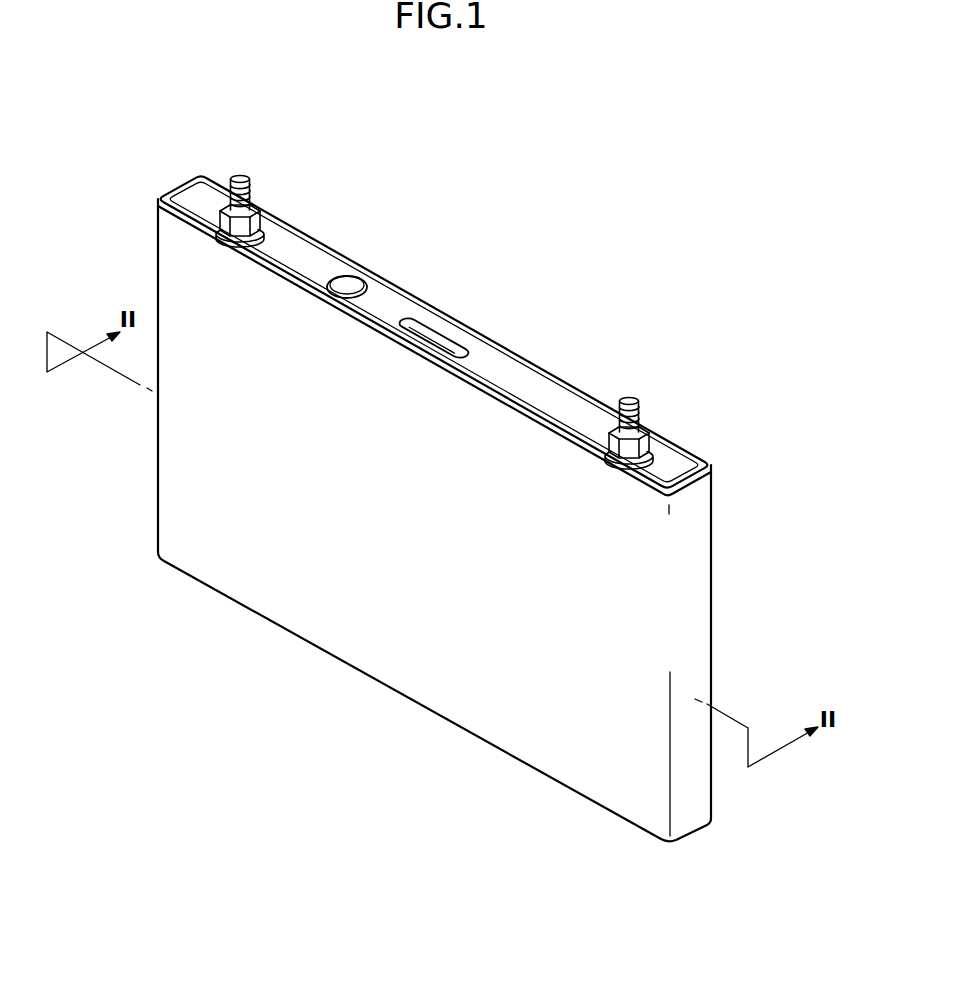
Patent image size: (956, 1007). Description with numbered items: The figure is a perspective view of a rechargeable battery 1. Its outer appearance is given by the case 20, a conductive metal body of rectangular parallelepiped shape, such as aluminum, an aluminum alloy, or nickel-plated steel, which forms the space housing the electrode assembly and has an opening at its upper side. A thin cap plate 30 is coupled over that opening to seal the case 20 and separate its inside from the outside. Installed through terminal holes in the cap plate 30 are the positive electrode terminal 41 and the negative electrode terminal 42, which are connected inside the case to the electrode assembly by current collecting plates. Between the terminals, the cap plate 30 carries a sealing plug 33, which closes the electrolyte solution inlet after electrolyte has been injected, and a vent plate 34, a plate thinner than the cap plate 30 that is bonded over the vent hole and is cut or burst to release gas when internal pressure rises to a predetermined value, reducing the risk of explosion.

The rechargeable battery 1 is at (434, 470).
The case 20 is at (413, 682).
The cap plate 30 is at (535, 392).
The sealing plug 33 is at (345, 285).
The vent plate 34 is at (427, 335).
The positive electrode terminal 41 is at (240, 180).
The negative electrode terminal 42 is at (630, 402).